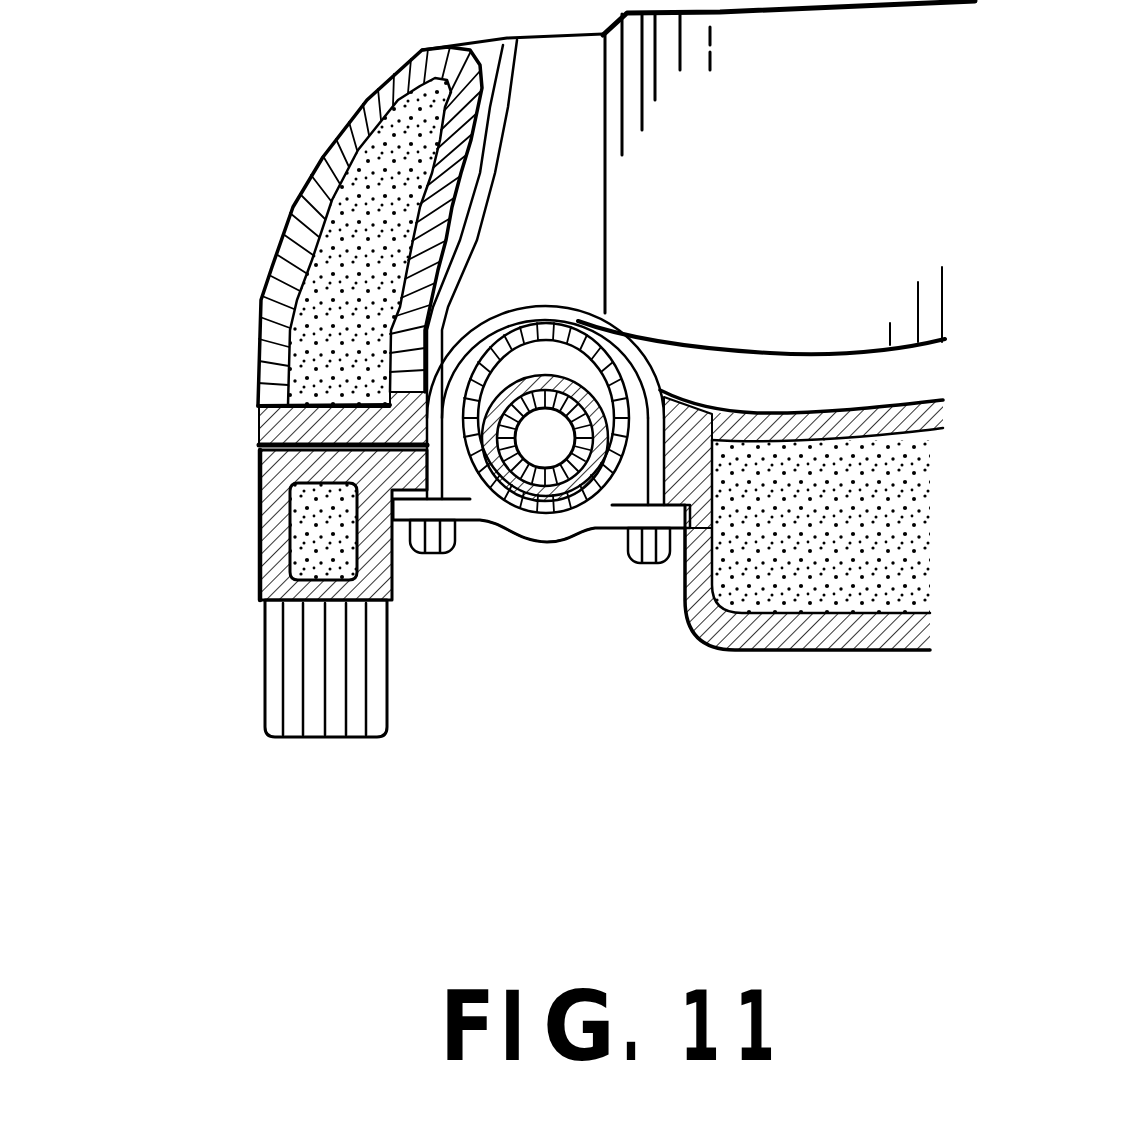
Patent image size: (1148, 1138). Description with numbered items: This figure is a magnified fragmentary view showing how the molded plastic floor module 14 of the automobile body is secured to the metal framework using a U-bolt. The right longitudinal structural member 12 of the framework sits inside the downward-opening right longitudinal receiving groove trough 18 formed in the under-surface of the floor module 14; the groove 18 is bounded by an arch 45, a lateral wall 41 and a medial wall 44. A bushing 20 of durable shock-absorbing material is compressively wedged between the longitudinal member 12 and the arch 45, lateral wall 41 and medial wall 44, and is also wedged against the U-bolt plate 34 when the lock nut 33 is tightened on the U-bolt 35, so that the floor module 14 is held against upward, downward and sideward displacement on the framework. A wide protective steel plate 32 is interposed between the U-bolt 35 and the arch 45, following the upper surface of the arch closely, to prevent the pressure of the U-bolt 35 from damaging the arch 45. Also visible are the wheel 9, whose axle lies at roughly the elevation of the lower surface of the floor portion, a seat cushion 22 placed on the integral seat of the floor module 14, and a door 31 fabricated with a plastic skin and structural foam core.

The wheels 9 is at (262, 690).
The right longitudinal structural member 12 is at (547, 513).
The floor module 14 is at (265, 538).
The right longitudinal receiving groove trough 18 is at (487, 540).
The bushing means 20 is at (580, 528).
The cushions 22 is at (815, 382).
The doors 31 is at (270, 237).
The steel plate 32 is at (520, 307).
The lock nut 33 is at (673, 563).
The U-bolt plate 34 is at (594, 522).
The U-bolt 35 is at (568, 320).
The lateral wall 41 is at (453, 440).
The medial wall 44 is at (657, 388).
The arch 45 is at (560, 365).